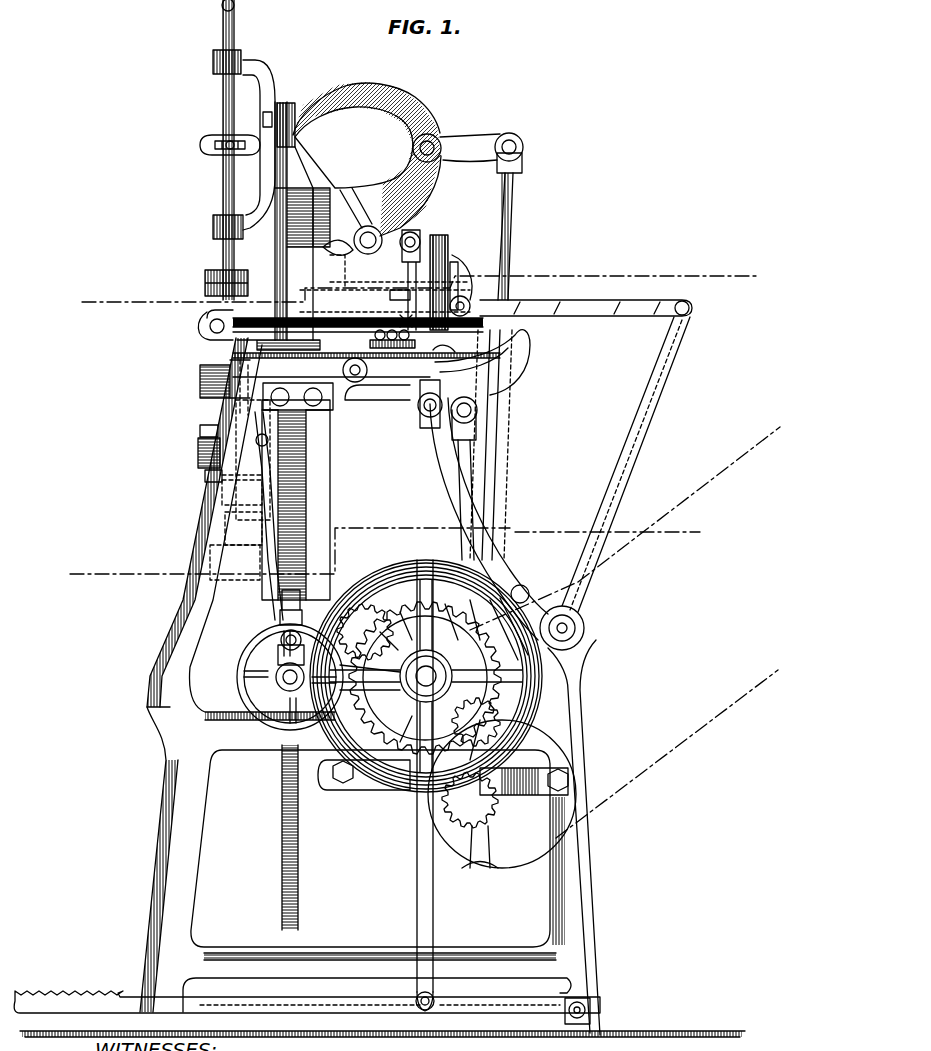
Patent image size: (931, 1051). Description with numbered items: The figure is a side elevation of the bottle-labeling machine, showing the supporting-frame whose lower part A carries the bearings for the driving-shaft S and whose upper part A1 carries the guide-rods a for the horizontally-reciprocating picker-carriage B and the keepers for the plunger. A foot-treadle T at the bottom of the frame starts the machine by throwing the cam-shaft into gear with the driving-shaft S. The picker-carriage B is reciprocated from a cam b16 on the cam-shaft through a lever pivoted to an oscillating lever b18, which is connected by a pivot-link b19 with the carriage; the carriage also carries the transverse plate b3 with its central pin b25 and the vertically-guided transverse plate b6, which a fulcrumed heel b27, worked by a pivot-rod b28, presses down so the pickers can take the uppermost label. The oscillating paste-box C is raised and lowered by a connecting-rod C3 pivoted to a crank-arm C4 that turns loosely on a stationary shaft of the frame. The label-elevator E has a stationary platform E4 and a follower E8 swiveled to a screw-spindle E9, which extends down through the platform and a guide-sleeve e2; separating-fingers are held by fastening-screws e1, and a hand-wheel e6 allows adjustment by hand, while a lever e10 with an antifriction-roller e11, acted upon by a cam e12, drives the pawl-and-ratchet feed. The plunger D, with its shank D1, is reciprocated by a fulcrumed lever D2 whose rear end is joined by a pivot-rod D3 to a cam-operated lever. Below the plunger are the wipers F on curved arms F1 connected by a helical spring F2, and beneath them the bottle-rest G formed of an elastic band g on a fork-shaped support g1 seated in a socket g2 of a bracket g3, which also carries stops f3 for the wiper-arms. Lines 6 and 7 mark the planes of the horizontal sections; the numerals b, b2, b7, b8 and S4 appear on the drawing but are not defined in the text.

The supporting-frame lower part A is at (165, 661).
The supporting-frame upper part A1 is at (360, 146).
The foot-treadle T is at (98, 992).
The plunger D is at (205, 290).
The plunger shank D1 is at (232, 114).
The fulcrumed lever D2 is at (368, 98).
The pivot-rod D3 is at (508, 270).
The picker-carriage B is at (385, 280).
The frame lug b is at (492, 348).
The pivot pin b2 is at (466, 296).
The transverse plate b3 is at (460, 276).
The transverse plate b6 is at (420, 292).
The arm b7 is at (516, 614).
The pin b8 is at (398, 313).
The cam b16 is at (450, 612).
The oscillating lever b18 is at (638, 440).
The pivot-link b19 is at (592, 312).
The central pin b25 is at (462, 262).
The fulcrumed heel b27 is at (347, 258).
The pivot-rod b28 is at (424, 255).
The guide-rods a is at (297, 341).
The fastening-screws e1 is at (339, 363).
The guide-sleeve e2 is at (372, 351).
The hand-wheel e6 is at (252, 678).
The lever e10 is at (365, 632).
The antifriction-roller e11 is at (370, 677).
The cam e12 is at (435, 715).
The paste-box C is at (380, 380).
The connecting-rod C3 is at (478, 472).
The crank-arm C4 is at (478, 410).
The label-elevator E is at (308, 483).
The stationary platform E4 is at (262, 630).
The follower E8 is at (280, 596).
The screw-spindle E9 is at (282, 826).
The wipers F is at (200, 360).
The curved arms F1 is at (235, 418).
The helical spring F2 is at (257, 516).
The bottle-rest G is at (198, 462).
The elastic band g is at (209, 433).
The fork-shaped support g1 is at (205, 476).
The socket g2 is at (262, 493).
The bracket g3 is at (262, 514).
The stops f3 is at (200, 481).
The driving-shaft S is at (502, 794).
The hub S4 is at (426, 676).
The section line 6- 6 is at (413, 296).
The section line 7- 7 is at (411, 632).